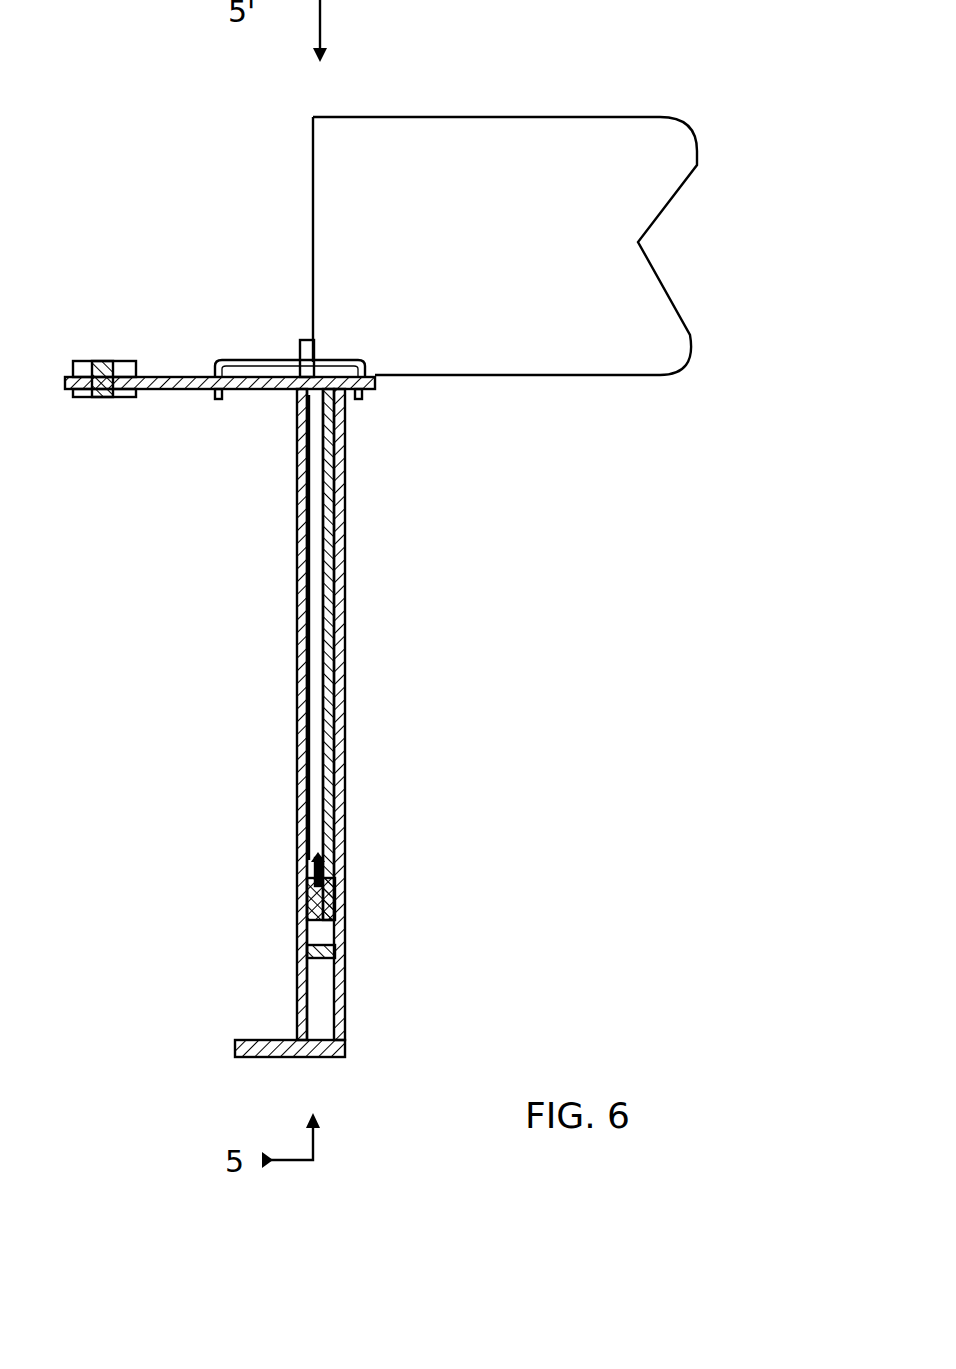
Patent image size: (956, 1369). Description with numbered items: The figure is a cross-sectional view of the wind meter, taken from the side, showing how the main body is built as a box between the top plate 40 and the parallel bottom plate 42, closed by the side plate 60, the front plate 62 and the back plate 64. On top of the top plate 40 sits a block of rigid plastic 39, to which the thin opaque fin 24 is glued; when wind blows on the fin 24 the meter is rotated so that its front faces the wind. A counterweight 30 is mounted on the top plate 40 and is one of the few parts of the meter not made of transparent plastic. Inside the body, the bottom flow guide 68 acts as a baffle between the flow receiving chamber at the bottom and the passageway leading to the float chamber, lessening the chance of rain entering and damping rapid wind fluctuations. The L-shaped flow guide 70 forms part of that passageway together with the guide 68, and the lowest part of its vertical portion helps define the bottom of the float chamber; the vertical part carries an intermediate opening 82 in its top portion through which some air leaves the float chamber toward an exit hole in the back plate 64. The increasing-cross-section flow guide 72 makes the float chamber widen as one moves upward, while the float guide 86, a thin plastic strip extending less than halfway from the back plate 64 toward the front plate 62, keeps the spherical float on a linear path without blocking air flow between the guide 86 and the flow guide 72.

The fin 24 is at (612, 117).
The counterweight 30 is at (103, 361).
The block of rigid plastic 39 is at (305, 360).
The top plate 40 is at (178, 377).
The bottom plate 42 is at (250, 1040).
The side plate 60 is at (320, 1012).
The front plate 62 is at (297, 657).
The back plate 64 is at (345, 648).
The bottom flow guide 68 is at (320, 963).
The L-shaped flow guide 70 is at (343, 888).
The increasing-cross-section flow guide 72 is at (315, 563).
The intermediate opening 82 is at (318, 858).
The float guide 86 is at (330, 495).